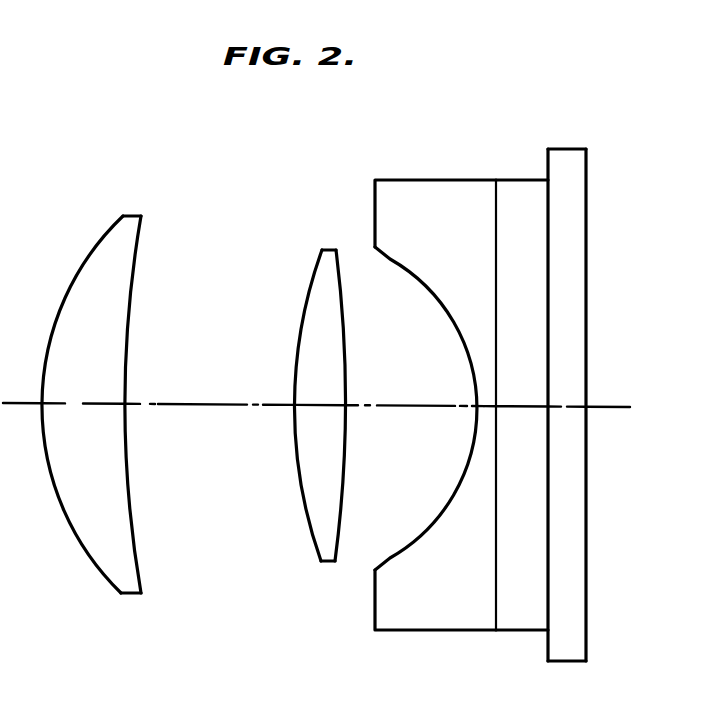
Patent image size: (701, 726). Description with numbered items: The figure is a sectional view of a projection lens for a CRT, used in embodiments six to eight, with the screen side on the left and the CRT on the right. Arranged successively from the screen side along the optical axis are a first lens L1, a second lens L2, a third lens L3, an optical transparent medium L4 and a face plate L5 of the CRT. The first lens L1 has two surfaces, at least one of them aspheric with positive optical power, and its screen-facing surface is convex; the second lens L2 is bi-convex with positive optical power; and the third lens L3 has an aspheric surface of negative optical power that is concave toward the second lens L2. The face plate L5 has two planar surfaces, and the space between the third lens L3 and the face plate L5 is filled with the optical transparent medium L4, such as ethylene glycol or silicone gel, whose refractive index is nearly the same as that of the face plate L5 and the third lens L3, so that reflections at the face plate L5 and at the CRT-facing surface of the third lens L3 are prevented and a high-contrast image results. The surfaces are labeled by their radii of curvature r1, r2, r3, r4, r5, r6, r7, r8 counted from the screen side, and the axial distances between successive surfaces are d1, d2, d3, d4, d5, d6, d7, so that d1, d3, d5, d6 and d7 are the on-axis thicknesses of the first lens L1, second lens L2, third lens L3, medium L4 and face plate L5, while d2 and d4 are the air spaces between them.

The first lens L1 is at (119, 400).
The second lens L2 is at (311, 411).
The third lens L3 is at (432, 380).
The optical transparent medium L4 is at (492, 403).
The face plate L5 is at (572, 388).
The radius of curvature of first lens surface r1 is at (92, 570).
The radius of curvature of second lens surface r2 is at (141, 582).
The radius of curvature of third lens surface r3 is at (309, 532).
The radius of curvature of fourth lens surface r4 is at (334, 547).
The radius of curvature of fifth lens surface r5 is at (399, 548).
The radius of curvature of sixth lens surface r6 is at (493, 600).
The radius of curvature of seventh lens surface r7 is at (547, 600).
The radius of curvature of eighth lens surface r8 is at (586, 611).
The axial distance between first and second surfaces d1 is at (73, 403).
The axial distance between second and third surfaces d2 is at (197, 404).
The axial distance between third and fourth surfaces d3 is at (313, 404).
The axial distance between fourth and fifth surfaces d4 is at (412, 405).
The axial distance between fifth and sixth surfaces d5 is at (483, 406).
The axial distance between sixth and seventh surfaces d6 is at (518, 406).
The axial distance between seventh and eighth surfaces d7 is at (566, 406).